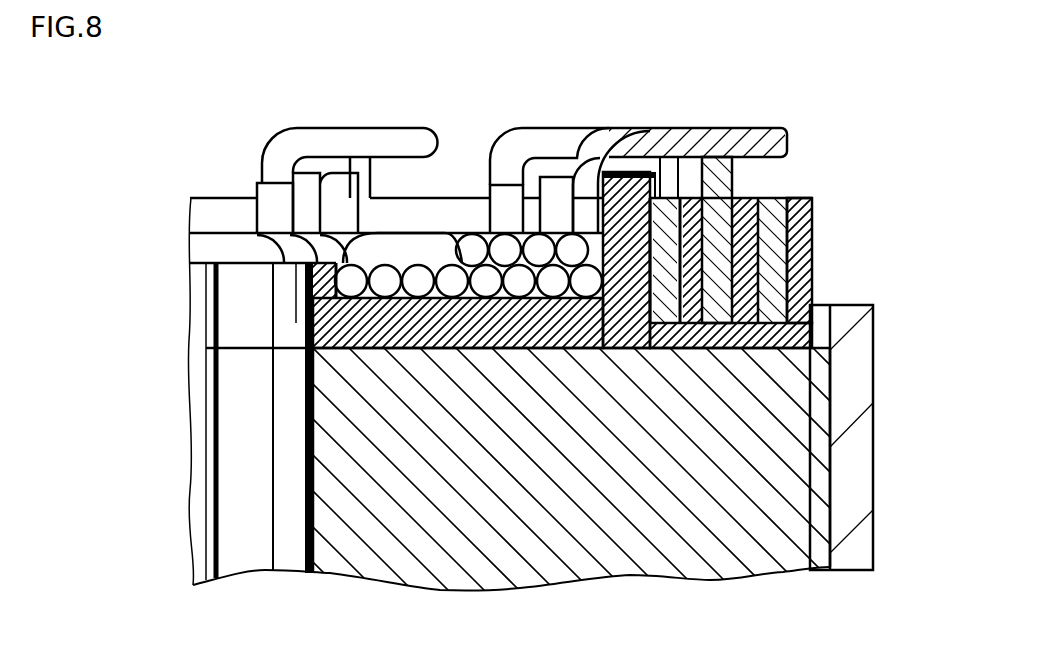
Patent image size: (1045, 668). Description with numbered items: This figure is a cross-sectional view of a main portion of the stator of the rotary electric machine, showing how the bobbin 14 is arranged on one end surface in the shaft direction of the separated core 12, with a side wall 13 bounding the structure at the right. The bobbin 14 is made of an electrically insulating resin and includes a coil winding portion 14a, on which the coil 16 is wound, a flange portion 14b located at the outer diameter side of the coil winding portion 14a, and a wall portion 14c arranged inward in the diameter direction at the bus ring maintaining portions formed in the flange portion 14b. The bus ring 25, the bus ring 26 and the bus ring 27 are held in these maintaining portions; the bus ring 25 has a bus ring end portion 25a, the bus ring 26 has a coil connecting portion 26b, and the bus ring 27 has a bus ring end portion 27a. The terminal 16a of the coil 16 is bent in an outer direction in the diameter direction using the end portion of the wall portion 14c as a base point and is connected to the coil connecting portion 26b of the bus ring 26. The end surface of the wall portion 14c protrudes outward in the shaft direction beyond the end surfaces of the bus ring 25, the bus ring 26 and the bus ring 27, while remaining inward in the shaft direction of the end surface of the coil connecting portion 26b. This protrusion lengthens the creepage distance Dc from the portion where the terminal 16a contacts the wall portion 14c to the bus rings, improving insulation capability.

The separated core 12 is at (734, 565).
The side wall 13 is at (873, 383).
The bobbin 14 is at (517, 340).
The coil winding portion 14a is at (300, 290).
The flange portion 14b is at (812, 258).
The wall portion 14c is at (613, 222).
The coil 16 is at (420, 282).
The terminal 16a is at (333, 127).
The bus ring 25 is at (735, 350).
The bus ring end portion 25a is at (665, 196).
The bus ring 26 is at (700, 350).
The coil connecting portion 26b is at (733, 180).
The bus ring 27 is at (815, 310).
The bus ring end portion 27a is at (777, 193).
The creepage distance Dc is at (640, 170).